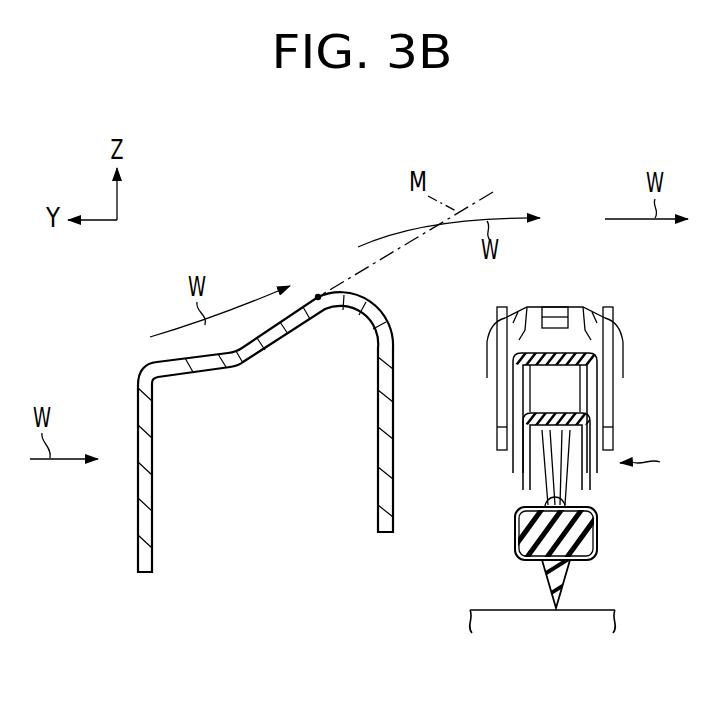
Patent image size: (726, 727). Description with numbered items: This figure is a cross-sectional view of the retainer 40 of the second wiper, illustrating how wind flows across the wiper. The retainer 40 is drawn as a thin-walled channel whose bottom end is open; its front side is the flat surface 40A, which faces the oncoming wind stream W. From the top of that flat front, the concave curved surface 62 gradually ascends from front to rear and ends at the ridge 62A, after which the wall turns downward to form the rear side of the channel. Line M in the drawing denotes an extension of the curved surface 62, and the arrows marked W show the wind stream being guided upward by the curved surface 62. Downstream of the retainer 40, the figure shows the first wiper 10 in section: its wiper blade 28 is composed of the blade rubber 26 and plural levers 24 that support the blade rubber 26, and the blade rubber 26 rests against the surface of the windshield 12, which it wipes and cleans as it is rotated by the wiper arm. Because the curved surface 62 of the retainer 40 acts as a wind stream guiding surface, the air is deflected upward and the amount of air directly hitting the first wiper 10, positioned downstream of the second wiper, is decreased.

The first wiper 10 is at (579, 361).
The windshield 12 is at (484, 610).
The levers 24 is at (565, 398).
The blade rubber 26 is at (563, 590).
The wiper blade 28 is at (653, 460).
The retainer 40 is at (121, 397).
The flat surface 40A is at (138, 518).
The curved surface 62 is at (164, 359).
The ridge 62A is at (318, 296).